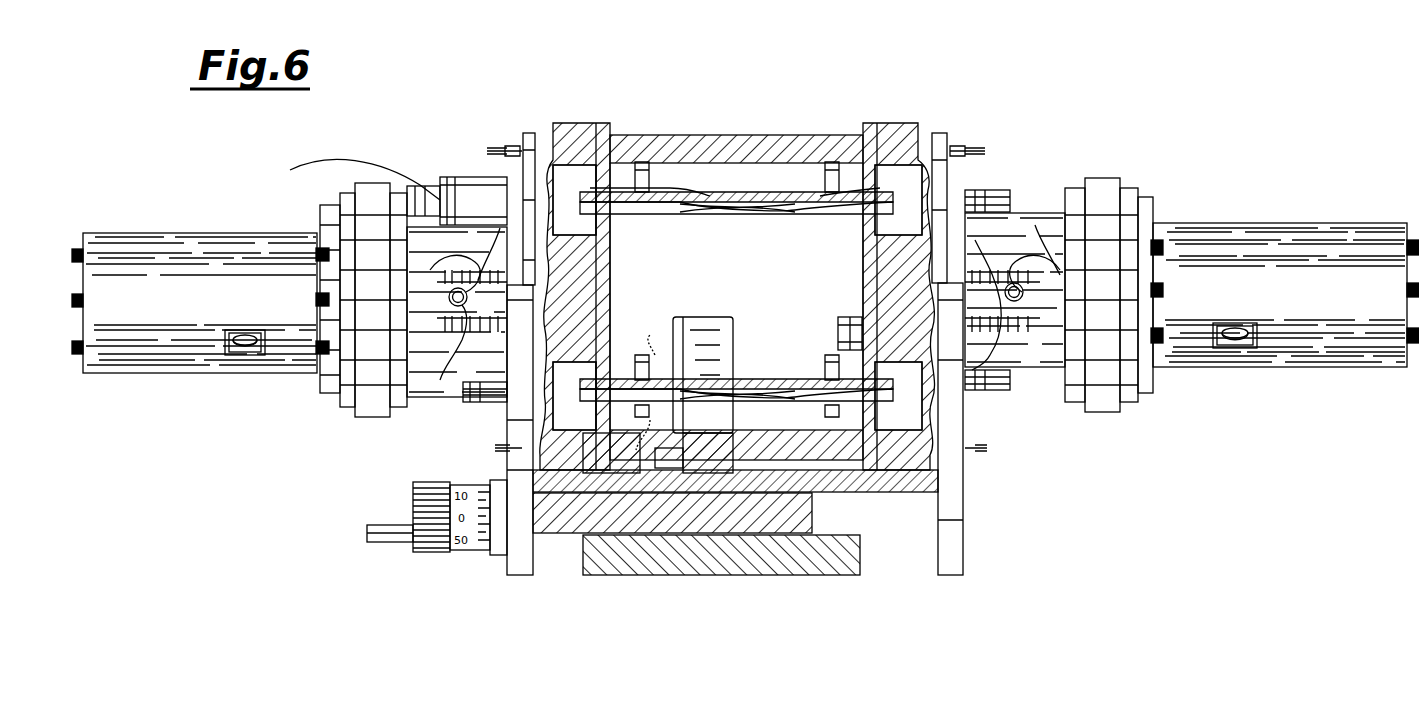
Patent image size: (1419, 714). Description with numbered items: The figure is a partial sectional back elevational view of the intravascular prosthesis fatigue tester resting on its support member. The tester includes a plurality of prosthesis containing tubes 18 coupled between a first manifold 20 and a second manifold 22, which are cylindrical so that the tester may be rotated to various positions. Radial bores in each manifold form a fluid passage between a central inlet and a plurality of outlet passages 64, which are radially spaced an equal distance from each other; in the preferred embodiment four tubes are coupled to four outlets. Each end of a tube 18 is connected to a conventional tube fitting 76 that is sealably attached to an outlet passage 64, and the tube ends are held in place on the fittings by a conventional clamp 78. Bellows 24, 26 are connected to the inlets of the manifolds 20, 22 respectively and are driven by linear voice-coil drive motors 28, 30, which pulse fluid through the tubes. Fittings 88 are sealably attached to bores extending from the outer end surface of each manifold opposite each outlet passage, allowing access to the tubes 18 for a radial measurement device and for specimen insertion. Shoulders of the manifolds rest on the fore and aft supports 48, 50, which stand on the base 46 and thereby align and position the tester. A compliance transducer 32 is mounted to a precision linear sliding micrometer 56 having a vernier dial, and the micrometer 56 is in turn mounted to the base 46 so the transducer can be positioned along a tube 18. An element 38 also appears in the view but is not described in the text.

The prosthesis containing tube 18 is at (738, 215).
The first manifold 20 is at (877, 125).
The second manifold 22 is at (578, 125).
The bellows 24 is at (1036, 262).
The bellows 26 is at (425, 262).
The linear voice-coil drive motor 28 is at (1100, 178).
The linear voice-coil drive motor 30 is at (362, 185).
The compliance transducer 32 is at (712, 317).
The connector fitting 38 is at (470, 178).
The base 46 is at (875, 493).
The fore support 48 is at (520, 576).
The aft support 50 is at (952, 576).
The precision linear sliding micrometer 56 is at (735, 576).
The outlet passage 64 is at (585, 225).
The tube fitting 76 is at (620, 195).
The clamp 78 is at (650, 190).
The fitting 88 is at (465, 383).